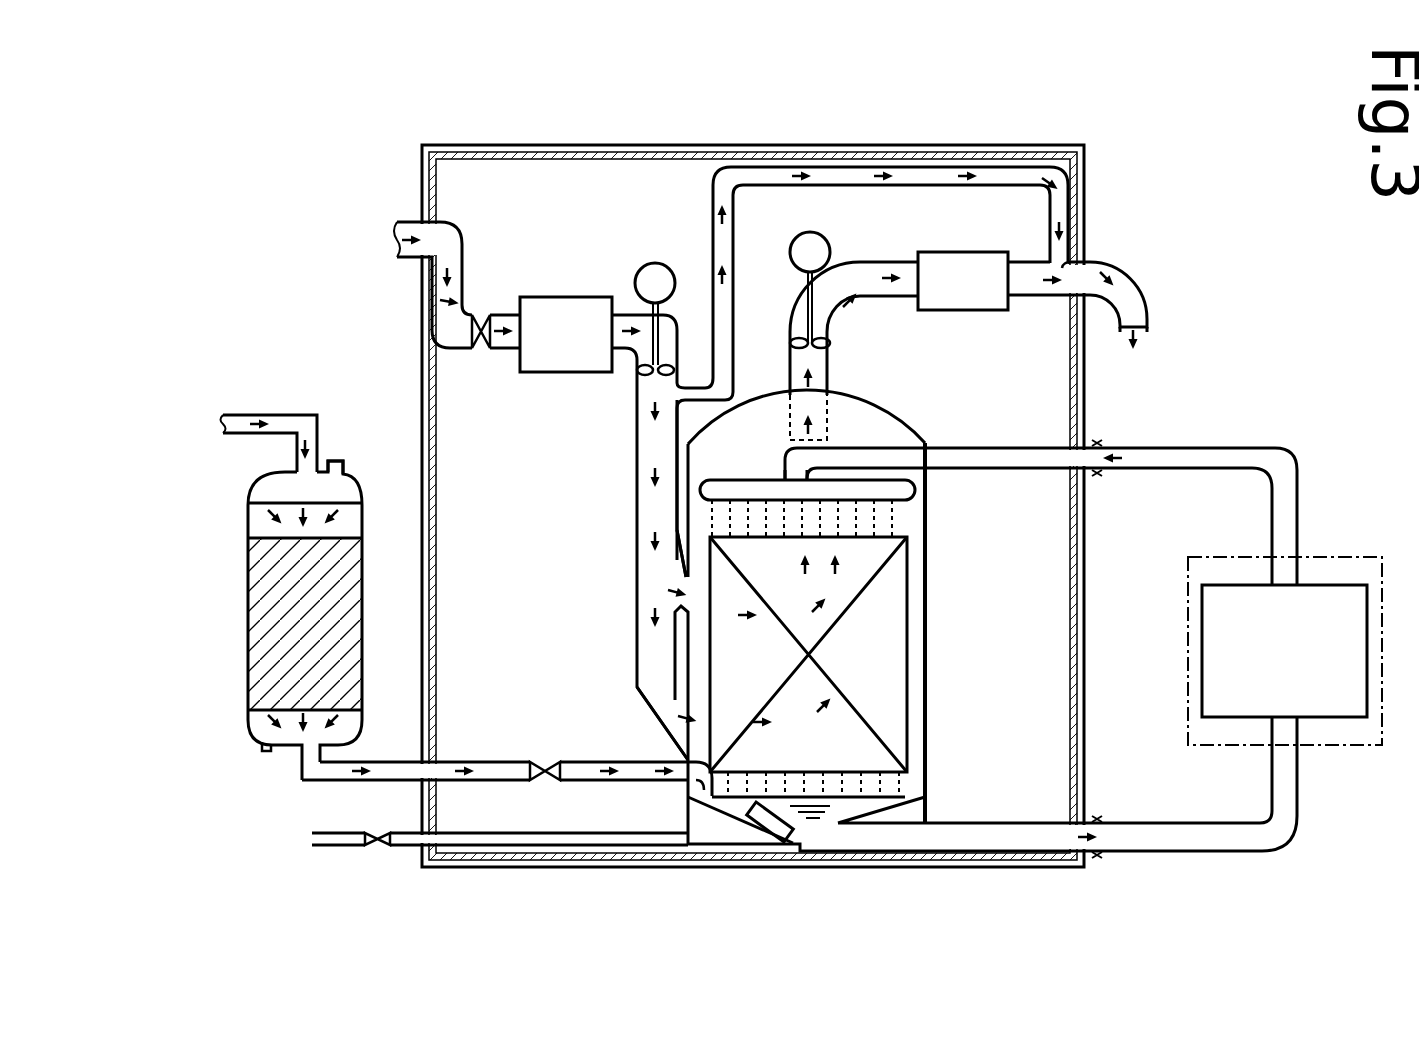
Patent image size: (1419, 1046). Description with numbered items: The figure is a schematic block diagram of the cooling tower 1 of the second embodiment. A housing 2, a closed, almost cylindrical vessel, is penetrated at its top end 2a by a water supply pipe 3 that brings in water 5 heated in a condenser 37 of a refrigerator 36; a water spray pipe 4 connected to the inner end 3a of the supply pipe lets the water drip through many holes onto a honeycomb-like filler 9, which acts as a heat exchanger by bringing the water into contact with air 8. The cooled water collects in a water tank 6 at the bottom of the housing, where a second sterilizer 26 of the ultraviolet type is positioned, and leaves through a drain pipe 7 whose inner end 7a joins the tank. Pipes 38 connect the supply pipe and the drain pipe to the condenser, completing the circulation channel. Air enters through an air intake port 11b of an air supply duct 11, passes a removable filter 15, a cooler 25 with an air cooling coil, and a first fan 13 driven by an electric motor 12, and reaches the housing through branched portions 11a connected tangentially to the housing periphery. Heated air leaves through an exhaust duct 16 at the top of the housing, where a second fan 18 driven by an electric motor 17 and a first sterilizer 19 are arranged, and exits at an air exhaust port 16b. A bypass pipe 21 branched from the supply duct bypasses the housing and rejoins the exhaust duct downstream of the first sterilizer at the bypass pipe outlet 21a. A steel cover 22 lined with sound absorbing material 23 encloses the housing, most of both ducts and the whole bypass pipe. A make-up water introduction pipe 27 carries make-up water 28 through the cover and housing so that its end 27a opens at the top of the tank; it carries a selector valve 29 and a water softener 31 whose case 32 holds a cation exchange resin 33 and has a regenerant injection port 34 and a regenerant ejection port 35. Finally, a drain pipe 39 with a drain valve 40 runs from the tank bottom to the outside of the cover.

The cooling tower 1 is at (722, 126).
The housing 2 is at (930, 672).
The top end 2a is at (892, 410).
The water supply pipe 3 is at (1003, 469).
The inner end 3a is at (784, 470).
The water spray pipe 4 is at (918, 495).
The water 5 is at (1105, 470).
The water tank 6 is at (735, 812).
The drain pipe 7 is at (985, 822).
The inner end 7a is at (828, 852).
The air 8 is at (462, 282).
The filler 9 is at (910, 605).
The air supply duct 11 is at (636, 472).
The branched portions 11a is at (650, 548).
The air intake port 11b is at (419, 285).
The electric motor 12 is at (655, 262).
The first fan 13 is at (638, 378).
The filter 15 is at (482, 352).
The exhaust duct 16 is at (877, 298).
The air exhaust port 16b is at (1143, 335).
The electric motor 17 is at (813, 232).
The second fan 18 is at (795, 340).
The first sterilizer 19 is at (960, 311).
The bypass pipe 21 is at (712, 188).
The bypass pipe outlet 21a is at (1078, 270).
The cover 22 is at (598, 145).
The sound absorbing material 23 is at (878, 162).
The cooler 25 is at (546, 372).
The second sterilizer 26 is at (768, 835).
The make-up water introduction pipe 27 is at (293, 415).
The end 27a is at (695, 793).
The make-up water 28 is at (255, 415).
The selector valve 29 is at (545, 761).
The water softener 31 is at (360, 599).
The case 32 is at (262, 668).
The cation exchange resin 33 is at (268, 572).
The regenerant injection port 34 is at (345, 461).
The regenerant ejection port 35 is at (270, 752).
The refrigerator 36 is at (1345, 556).
The condenser 37 is at (1337, 718).
The pipe 38 is at (1205, 469).
The drain pipe 39 is at (495, 846).
The drain valve 40 is at (375, 848).